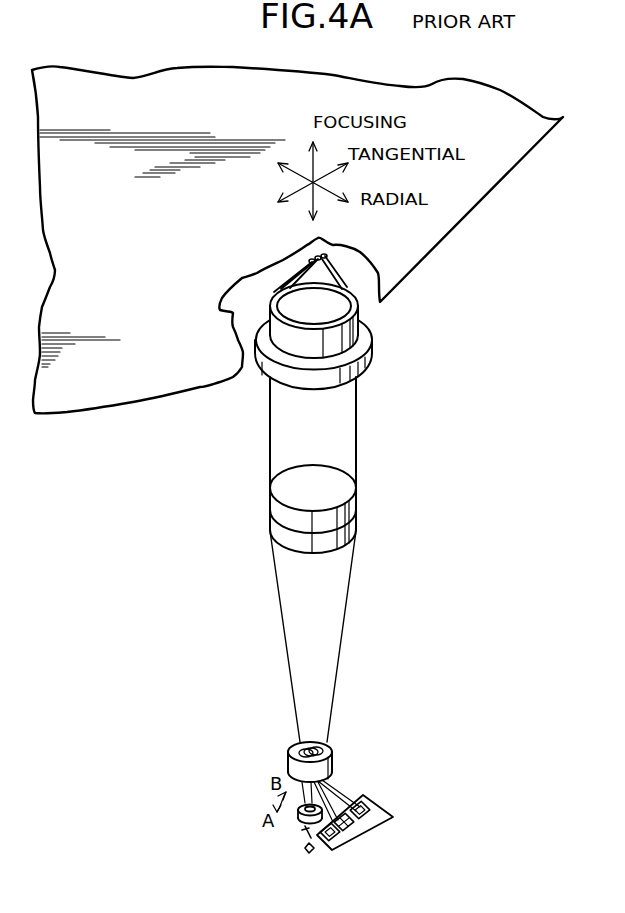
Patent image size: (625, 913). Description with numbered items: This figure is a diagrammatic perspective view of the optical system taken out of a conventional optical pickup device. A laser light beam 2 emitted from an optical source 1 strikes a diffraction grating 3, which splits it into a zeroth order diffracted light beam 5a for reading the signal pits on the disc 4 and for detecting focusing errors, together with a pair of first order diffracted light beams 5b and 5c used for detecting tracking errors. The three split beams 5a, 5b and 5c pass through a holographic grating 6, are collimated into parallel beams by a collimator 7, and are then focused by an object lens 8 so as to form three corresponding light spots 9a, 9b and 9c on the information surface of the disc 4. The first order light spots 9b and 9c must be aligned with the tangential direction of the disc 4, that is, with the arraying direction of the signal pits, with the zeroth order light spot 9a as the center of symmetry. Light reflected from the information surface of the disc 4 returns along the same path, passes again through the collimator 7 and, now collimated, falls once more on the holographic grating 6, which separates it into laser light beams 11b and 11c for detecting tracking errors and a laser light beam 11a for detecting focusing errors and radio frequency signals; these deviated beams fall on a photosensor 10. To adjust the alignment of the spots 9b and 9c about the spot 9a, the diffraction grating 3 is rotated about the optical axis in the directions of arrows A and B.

The optical source 1 is at (314, 849).
The laser light beam 2 is at (305, 828).
The diffraction grating 3 is at (298, 813).
The disc 4 is at (418, 267).
The zeroth order diffracted light beam 5a is at (335, 768).
The first order diffracted light beam 5b is at (288, 755).
The first order diffracted light beam 5c is at (330, 748).
The holographic grating 6 is at (288, 765).
The collimator 7 is at (338, 513).
The object lens 8 is at (362, 337).
The zeroth order light spot 9a is at (312, 256).
The first order light spot 9b is at (277, 287).
The first order light spot 9c is at (329, 258).
The photosensor 10 is at (378, 818).
The laser light beam for detecting focusing errors and RF signals 11a is at (360, 797).
The laser light beam for detecting tracking errors 11b is at (343, 832).
The laser light beam for detecting tracking errors 11c is at (340, 782).